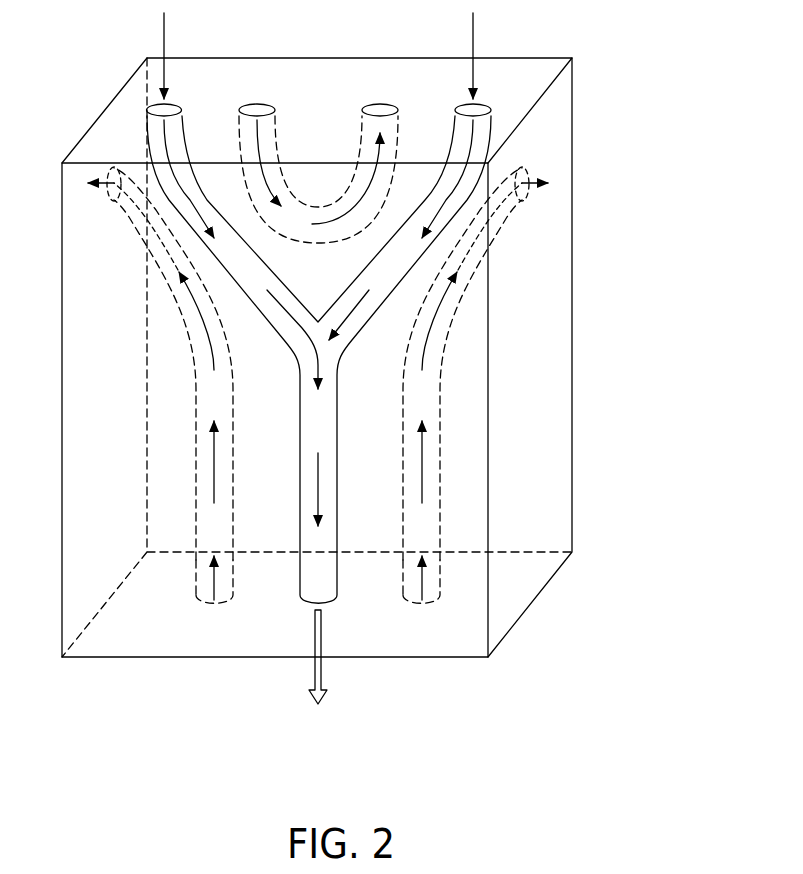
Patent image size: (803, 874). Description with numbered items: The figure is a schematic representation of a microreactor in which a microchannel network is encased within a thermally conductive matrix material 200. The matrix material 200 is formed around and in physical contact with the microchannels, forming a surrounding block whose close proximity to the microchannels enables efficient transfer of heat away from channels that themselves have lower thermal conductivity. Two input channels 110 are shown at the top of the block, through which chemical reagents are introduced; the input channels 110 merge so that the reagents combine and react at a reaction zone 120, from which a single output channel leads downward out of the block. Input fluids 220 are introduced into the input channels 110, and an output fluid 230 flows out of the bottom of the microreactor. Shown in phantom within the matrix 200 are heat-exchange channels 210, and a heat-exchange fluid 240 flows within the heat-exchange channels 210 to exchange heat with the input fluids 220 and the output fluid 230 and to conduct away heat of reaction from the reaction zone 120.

The input channel 110 is at (487, 96).
The reaction zone 120 is at (352, 356).
The matrix material 200 is at (573, 272).
The heat-exchange channel 210 is at (318, 244).
The input fluid 220 is at (166, 30).
The output fluid 230 is at (322, 682).
The heat-exchange fluid 240 is at (278, 132).